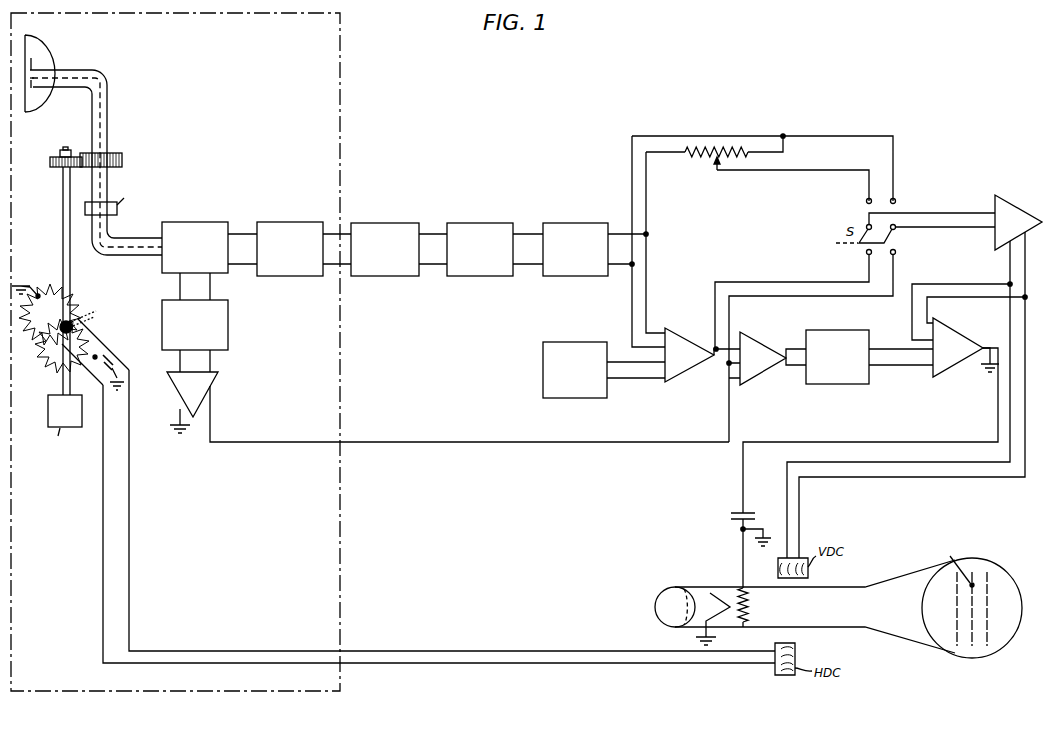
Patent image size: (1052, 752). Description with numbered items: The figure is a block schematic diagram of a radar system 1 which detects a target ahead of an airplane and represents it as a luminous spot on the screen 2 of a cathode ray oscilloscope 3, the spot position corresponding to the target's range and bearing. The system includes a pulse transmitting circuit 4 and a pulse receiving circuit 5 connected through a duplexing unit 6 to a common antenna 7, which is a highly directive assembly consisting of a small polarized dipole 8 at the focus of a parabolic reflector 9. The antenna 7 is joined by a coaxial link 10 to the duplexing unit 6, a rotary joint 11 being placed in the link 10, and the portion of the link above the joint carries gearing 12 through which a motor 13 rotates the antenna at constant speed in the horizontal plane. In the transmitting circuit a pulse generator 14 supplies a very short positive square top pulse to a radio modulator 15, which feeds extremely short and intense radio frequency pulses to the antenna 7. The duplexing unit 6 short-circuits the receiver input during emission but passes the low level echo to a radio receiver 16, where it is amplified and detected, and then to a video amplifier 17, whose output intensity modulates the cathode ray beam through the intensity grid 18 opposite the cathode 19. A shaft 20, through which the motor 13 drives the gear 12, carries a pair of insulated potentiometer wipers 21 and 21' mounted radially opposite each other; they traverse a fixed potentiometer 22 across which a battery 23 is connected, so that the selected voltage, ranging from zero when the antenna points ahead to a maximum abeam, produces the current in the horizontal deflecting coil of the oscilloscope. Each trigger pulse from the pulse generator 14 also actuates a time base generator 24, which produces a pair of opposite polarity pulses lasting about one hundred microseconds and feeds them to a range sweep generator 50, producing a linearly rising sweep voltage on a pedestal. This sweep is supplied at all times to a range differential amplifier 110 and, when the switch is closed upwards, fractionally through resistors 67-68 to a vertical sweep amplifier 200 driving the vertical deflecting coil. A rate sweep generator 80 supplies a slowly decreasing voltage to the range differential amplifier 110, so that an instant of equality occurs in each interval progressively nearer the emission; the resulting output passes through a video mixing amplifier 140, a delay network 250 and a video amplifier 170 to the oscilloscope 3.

The radar system 1 is at (340, 40).
The screen 2 is at (1000, 642).
The cathode ray oscilloscope 3 is at (890, 632).
The pulse transmitting circuit 4 is at (242, 229).
The pulse receiving circuit 5 is at (172, 286).
The duplexing unit 6 is at (200, 222).
The antenna 7 is at (58, 68).
The polarized dipole 8 is at (33, 90).
The parabolic reflector 9 is at (42, 94).
The coaxial link 10 is at (93, 240).
The rotary joint 11 is at (110, 213).
The gearing 12 is at (118, 156).
The motor 13 is at (48, 409).
The pulse generator 14 is at (372, 223).
The radio modulator 15 is at (290, 222).
The radio receiver 16 is at (228, 310).
The video amplifier 17 is at (214, 382).
The intensity grid 18 is at (742, 592).
The cathode 19 is at (710, 593).
The shaft 20 is at (63, 197).
The potentiometer wiper 21 is at (56, 352).
The potentiometer wiper 21' is at (109, 315).
The potentiometer 22 is at (60, 286).
The battery 23 is at (106, 352).
The time base generator 24 is at (488, 223).
The range sweep generator 50 is at (578, 223).
The resistors 67-68 is at (708, 170).
The rate sweep generator 80 is at (575, 342).
The range differential amplifier 110 is at (672, 377).
The video mixing amplifier 140 is at (750, 380).
The video amplifier 170 is at (948, 370).
The vertical sweep amplifier 200 is at (995, 205).
The delay network 250 is at (830, 384).